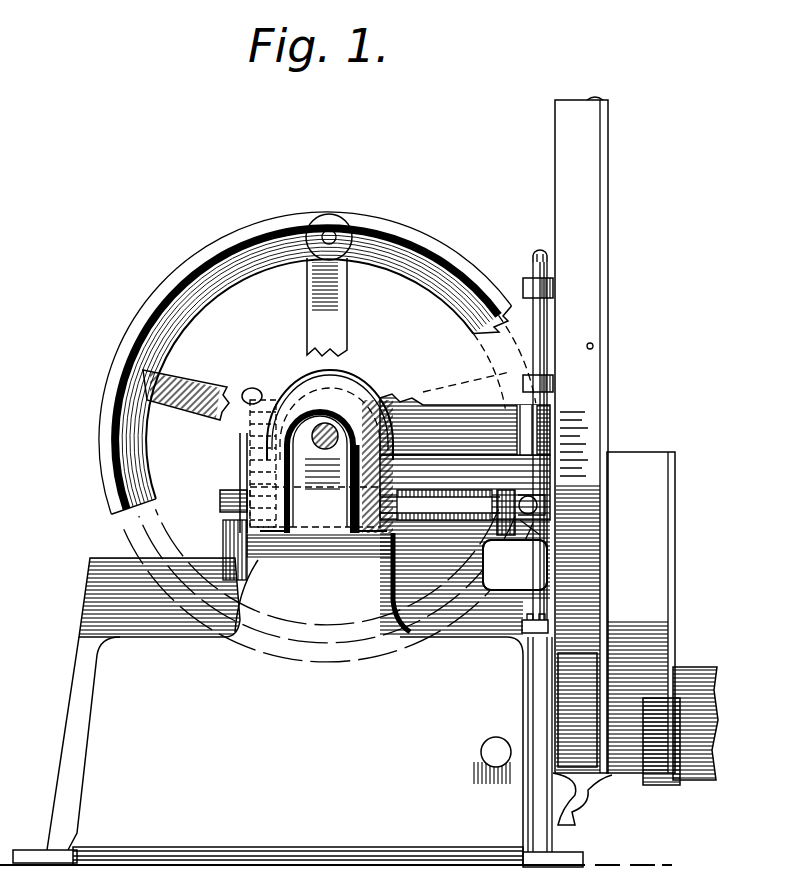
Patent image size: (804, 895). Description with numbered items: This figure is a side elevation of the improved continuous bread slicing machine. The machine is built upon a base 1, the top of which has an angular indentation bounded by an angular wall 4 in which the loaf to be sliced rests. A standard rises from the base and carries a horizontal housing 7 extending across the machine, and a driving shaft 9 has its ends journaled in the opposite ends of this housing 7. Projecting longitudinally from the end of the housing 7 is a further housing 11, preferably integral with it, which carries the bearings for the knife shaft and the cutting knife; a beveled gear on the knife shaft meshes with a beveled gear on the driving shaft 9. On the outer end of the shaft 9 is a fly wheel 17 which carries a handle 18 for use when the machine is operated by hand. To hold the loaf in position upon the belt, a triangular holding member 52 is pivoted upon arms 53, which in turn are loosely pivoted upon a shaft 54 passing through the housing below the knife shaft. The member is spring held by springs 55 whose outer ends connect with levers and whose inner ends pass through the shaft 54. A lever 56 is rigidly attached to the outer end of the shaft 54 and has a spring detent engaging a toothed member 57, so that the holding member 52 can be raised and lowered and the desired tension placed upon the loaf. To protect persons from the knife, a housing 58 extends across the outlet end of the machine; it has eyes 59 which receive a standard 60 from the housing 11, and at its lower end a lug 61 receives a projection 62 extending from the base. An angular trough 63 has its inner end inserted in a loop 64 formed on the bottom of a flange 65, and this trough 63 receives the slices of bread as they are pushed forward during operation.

The base 1 is at (83, 720).
The angular wall 4 is at (88, 593).
The horizontal housing 7 is at (290, 390).
The driving shaft 9 is at (338, 426).
The housing 11 is at (458, 420).
The fly wheel 17 is at (445, 290).
The handle 18 is at (312, 291).
The holding member 52 is at (515, 565).
The arms 53 is at (612, 545).
The shaft 54 is at (445, 500).
The springs 55 is at (240, 478).
The lever 56 is at (246, 390).
The toothed member 57 is at (243, 449).
The housing 58 is at (612, 301).
The eyes 59 is at (523, 285).
The standard 60 is at (533, 330).
The lug 61 is at (520, 637).
The projection 62 is at (540, 250).
The angular trough 63 is at (700, 660).
The loop 64 is at (660, 778).
The flange 65 is at (628, 464).